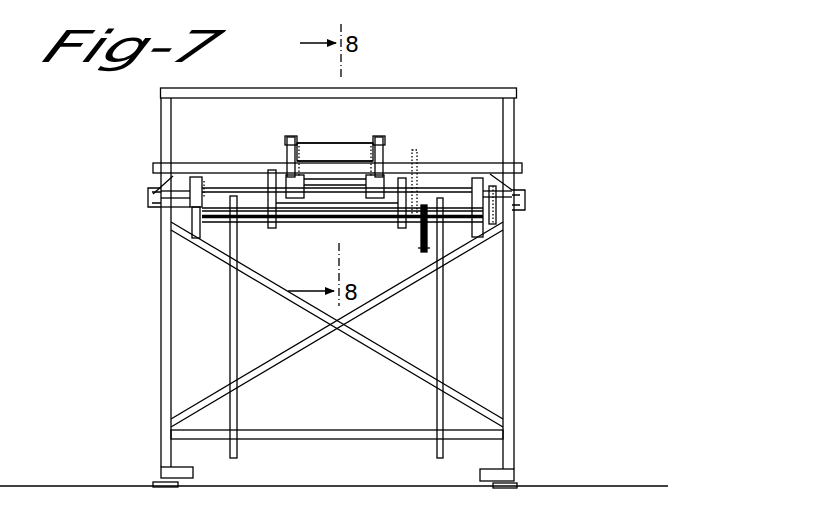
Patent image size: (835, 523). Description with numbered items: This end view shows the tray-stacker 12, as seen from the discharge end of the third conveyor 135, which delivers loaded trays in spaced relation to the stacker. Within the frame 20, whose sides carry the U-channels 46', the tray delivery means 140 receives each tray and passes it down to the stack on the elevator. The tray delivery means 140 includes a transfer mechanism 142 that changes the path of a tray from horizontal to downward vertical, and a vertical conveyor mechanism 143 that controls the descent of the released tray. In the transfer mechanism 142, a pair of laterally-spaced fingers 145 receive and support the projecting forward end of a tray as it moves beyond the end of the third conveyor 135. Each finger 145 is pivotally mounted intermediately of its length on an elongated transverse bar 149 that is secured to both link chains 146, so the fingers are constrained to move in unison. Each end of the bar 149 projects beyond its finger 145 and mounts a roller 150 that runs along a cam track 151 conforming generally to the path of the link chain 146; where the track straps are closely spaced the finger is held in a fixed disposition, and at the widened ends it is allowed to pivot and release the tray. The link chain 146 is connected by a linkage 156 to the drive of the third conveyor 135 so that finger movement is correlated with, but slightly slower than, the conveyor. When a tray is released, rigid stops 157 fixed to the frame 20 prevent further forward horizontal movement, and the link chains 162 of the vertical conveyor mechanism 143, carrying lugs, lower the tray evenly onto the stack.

The tray-stacker 12 is at (481, 73).
The frame 20 is at (520, 83).
The U-channels 46' is at (335, 327).
The tray delivery means 140 is at (443, 144).
The third conveyor 135 is at (206, 177).
The rigid stops 157 is at (193, 207).
The link chains 162 is at (368, 210).
The vertical conveyor mechanism 143 is at (389, 229).
The link chain 146 is at (366, 153).
The fingers 145 is at (312, 113).
The roller 150 is at (283, 140).
The cam track 151 is at (277, 157).
The transverse bar 149 is at (347, 141).
The transfer mechanism 142 is at (339, 137).
The linkage 156 is at (414, 232).